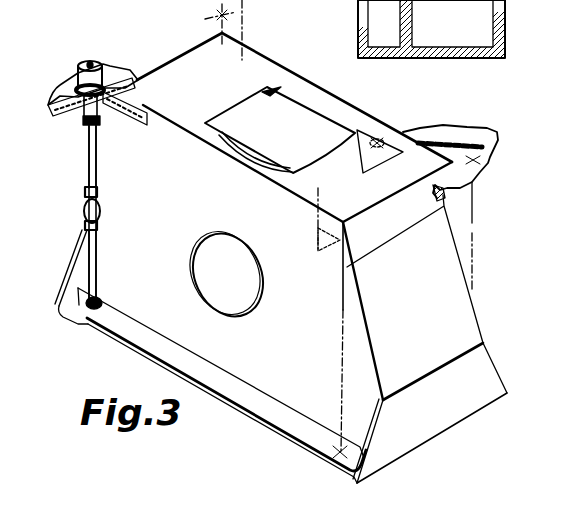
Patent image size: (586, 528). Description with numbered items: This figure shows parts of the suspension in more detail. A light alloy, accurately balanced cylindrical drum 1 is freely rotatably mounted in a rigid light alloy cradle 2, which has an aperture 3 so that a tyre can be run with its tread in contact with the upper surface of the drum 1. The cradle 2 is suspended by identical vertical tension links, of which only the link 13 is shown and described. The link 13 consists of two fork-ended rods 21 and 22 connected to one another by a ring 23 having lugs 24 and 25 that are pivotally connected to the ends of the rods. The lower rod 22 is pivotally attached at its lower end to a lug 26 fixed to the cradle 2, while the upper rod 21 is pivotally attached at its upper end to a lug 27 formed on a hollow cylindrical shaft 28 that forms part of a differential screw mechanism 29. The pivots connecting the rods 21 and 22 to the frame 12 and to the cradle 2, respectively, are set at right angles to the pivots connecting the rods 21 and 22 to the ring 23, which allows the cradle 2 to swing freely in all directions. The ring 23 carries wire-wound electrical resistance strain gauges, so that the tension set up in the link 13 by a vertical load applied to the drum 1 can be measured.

The cylindrical drum 1 is at (305, 117).
The cradle 2 is at (163, 320).
The aperture 3 is at (271, 91).
The frame 12 is at (118, 68).
The vertical tension link 13 is at (82, 173).
The fork-ended rod 21 is at (89, 157).
The fork-ended rod 22 is at (97, 262).
The ring 23 is at (101, 212).
The lug 24 is at (86, 196).
The lug 25 is at (85, 226).
The lug 26 is at (103, 302).
The lug 27 is at (110, 121).
The hollow cylindrical shaft 28 is at (84, 117).
The differential screw mechanism 29 is at (76, 70).